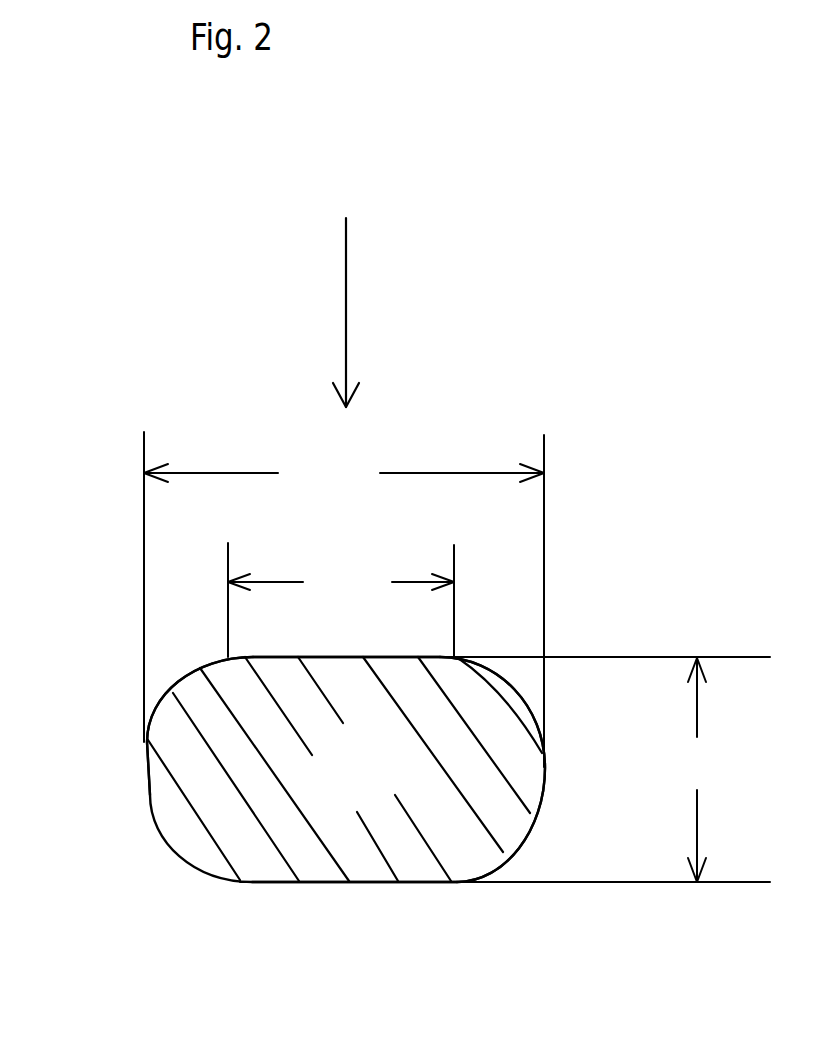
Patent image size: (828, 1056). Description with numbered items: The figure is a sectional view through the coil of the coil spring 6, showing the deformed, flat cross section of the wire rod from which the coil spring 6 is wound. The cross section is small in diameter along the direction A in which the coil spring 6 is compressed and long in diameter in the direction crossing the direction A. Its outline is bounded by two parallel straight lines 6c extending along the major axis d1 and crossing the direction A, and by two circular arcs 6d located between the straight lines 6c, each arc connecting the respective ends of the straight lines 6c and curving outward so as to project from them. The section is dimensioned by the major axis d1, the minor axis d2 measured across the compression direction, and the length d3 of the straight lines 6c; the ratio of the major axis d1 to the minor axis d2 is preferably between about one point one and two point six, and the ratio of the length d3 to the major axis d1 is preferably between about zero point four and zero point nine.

The coil spring 6 is at (370, 790).
The straight lines 6c is at (258, 655).
The circular arcs 6d is at (157, 817).
The direction A is at (347, 285).
The major axis d1 is at (344, 599).
The minor axis d2 is at (505, 769).
The length of the straight lines d3 is at (341, 600).